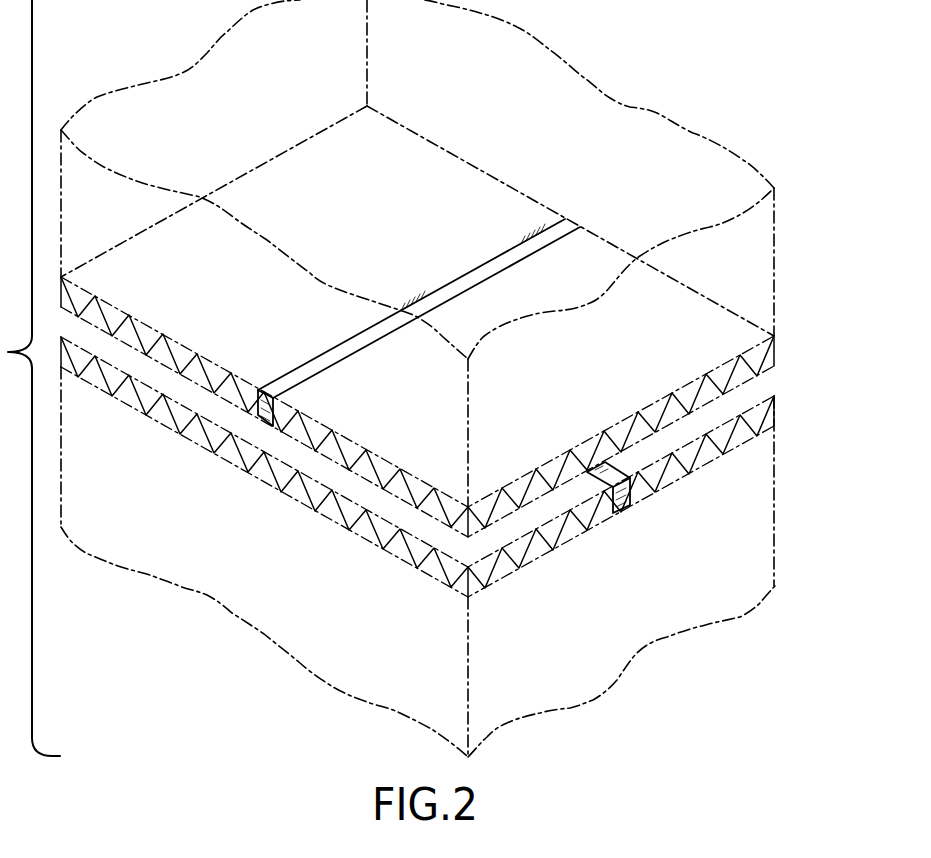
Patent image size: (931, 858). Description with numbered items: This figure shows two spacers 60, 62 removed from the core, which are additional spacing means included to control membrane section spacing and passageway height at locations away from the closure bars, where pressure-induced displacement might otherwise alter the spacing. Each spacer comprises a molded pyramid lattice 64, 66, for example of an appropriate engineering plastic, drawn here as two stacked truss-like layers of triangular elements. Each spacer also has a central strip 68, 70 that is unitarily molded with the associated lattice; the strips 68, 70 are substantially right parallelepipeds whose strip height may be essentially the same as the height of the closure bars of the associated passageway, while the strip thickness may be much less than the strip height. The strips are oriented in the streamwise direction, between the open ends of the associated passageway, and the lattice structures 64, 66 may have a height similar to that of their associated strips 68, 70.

The spacer 60 is at (732, 289).
The spacer 62 is at (437, 471).
The pyramid lattice 64 is at (453, 523).
The pyramid lattice 66 is at (500, 578).
The central strip 68 is at (453, 288).
The central strip 70 is at (618, 505).